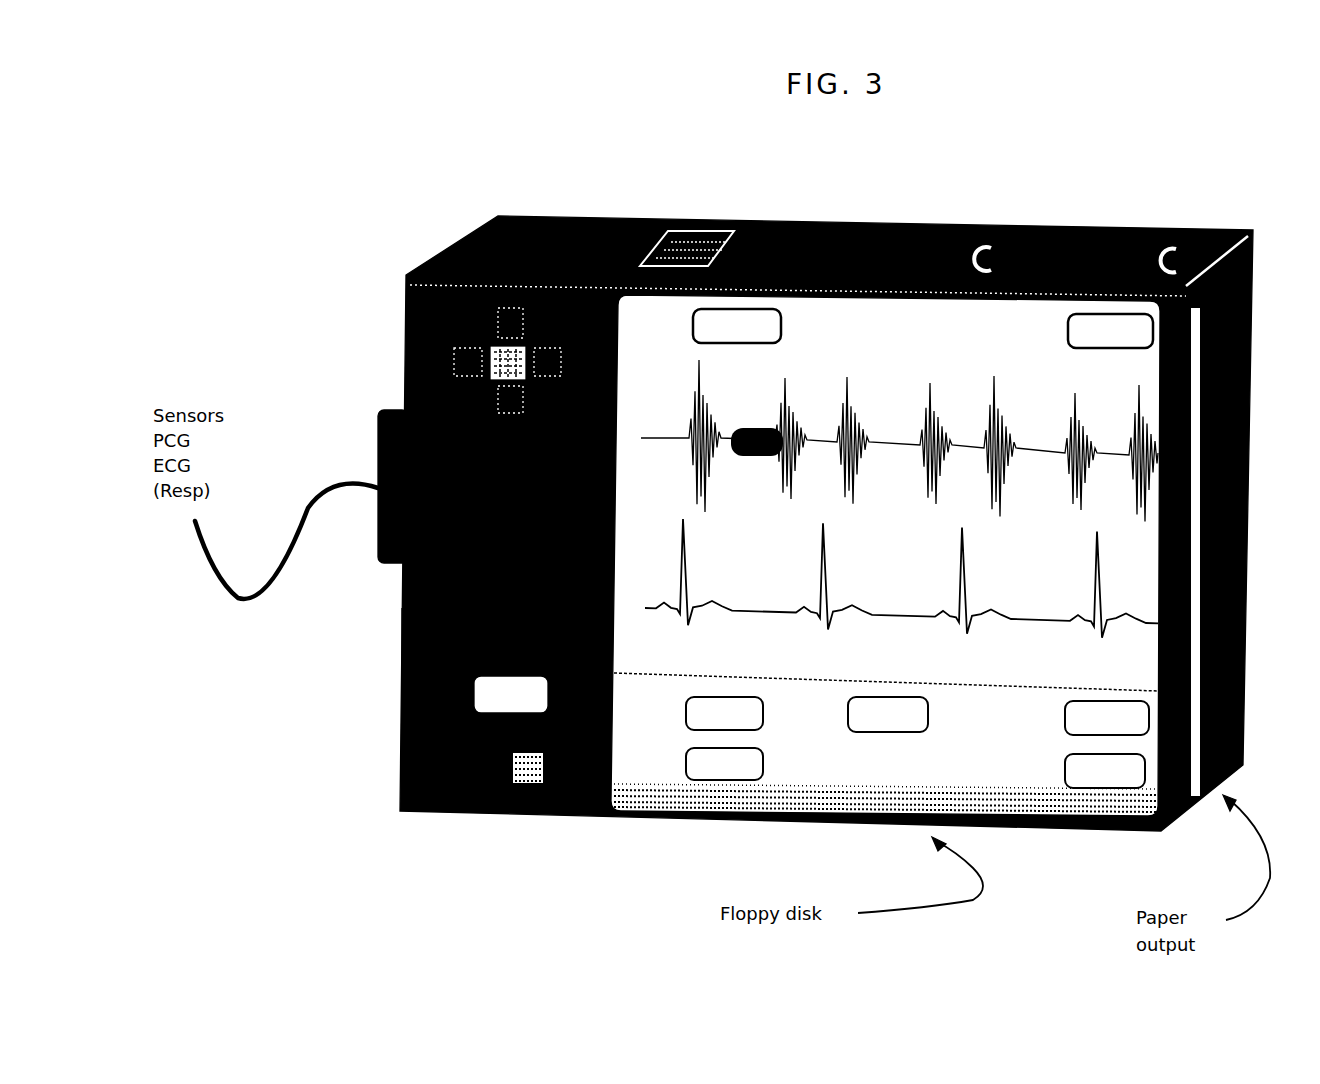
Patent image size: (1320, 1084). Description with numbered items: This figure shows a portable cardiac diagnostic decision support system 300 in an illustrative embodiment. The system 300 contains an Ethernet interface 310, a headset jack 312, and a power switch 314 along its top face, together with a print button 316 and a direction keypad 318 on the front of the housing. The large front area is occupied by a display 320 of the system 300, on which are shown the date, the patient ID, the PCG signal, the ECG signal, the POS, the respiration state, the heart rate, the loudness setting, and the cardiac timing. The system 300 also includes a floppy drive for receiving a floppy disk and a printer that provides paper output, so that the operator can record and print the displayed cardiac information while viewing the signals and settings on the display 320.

The portable cardiac diagnostic decision support system 300 is at (395, 172).
The Ethernet interface 310 is at (690, 218).
The headset jack 312 is at (976, 222).
The power switch 314 is at (1174, 226).
The print button 316 is at (395, 693).
The direction keypad 318 is at (397, 331).
The display 320 is at (630, 806).